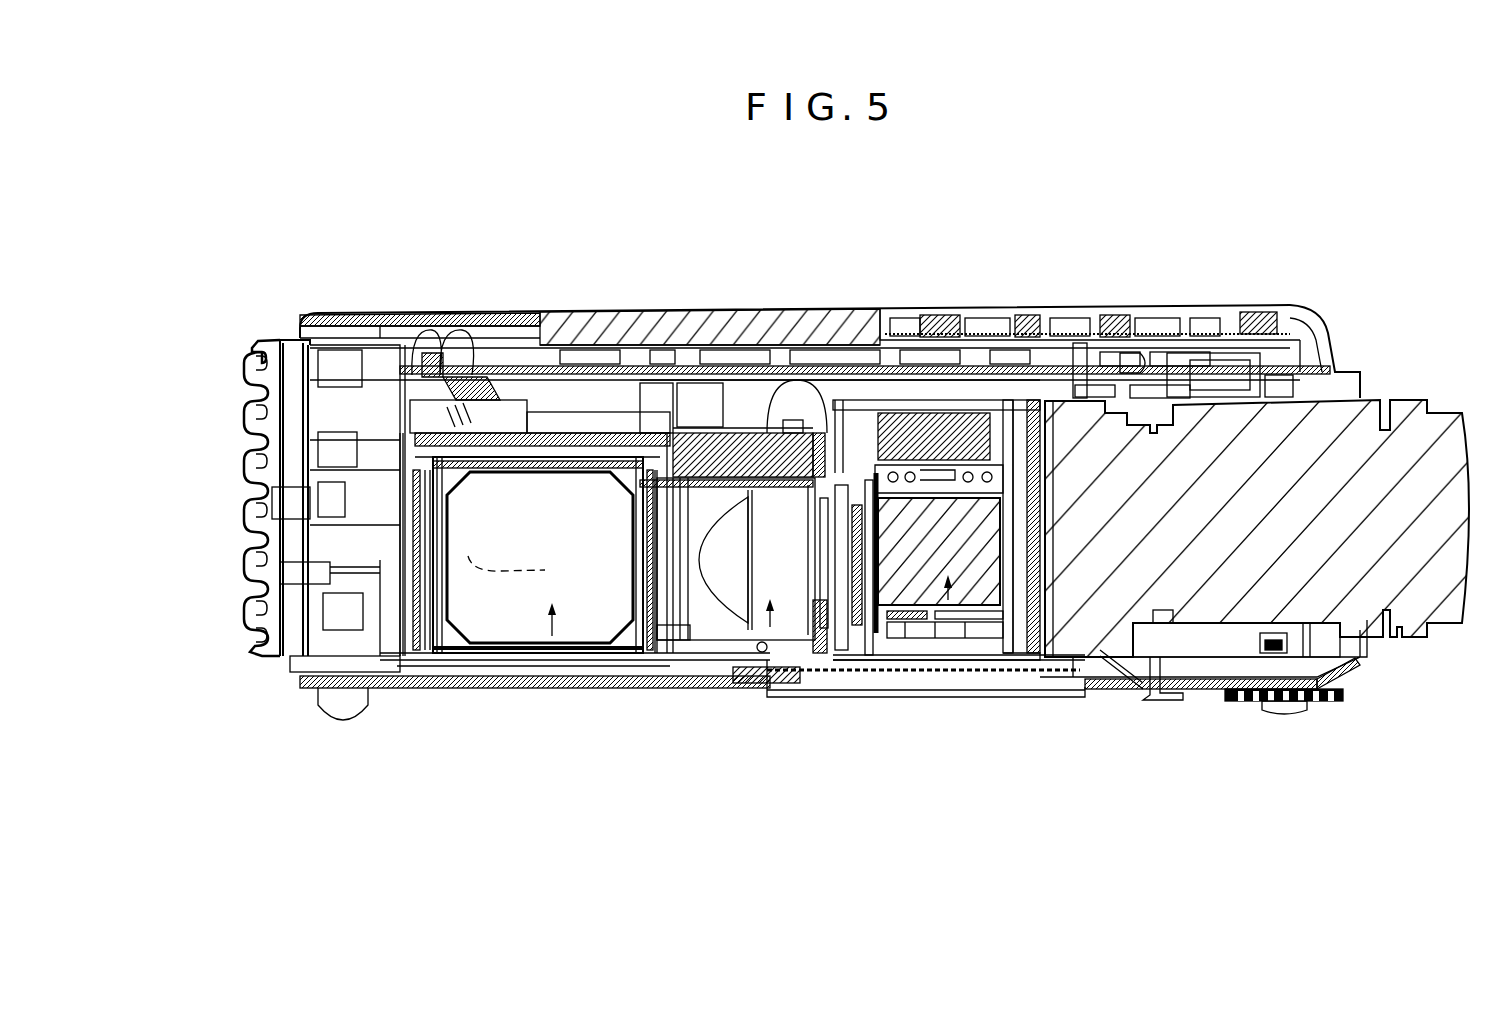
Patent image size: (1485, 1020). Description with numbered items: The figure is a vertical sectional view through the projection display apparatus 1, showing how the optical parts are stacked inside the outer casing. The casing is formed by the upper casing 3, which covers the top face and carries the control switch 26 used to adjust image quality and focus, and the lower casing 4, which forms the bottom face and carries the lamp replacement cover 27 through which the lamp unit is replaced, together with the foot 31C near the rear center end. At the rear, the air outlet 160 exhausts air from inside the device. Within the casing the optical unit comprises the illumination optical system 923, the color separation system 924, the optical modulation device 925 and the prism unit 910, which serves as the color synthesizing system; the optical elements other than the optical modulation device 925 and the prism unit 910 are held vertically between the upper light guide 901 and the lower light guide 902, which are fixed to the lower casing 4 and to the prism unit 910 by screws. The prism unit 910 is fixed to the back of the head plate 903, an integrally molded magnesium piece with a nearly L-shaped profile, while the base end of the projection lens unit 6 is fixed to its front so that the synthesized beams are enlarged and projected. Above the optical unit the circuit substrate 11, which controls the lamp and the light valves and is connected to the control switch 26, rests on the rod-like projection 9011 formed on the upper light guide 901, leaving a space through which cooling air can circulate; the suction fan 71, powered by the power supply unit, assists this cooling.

The projection display apparatus 1 is at (216, 266).
The upper casing 3 is at (562, 316).
The lower casing 4 is at (300, 683).
The projection lens unit 6 is at (1408, 430).
The circuit substrate 11 is at (740, 372).
The control switch 26 is at (1190, 318).
The lamp replacement cover 27 is at (521, 704).
The foot 31C is at (347, 718).
The suction fan 71 is at (915, 425).
The air outlet 160 is at (245, 497).
The upper light guide 901 is at (655, 405).
The rod-like projection 9011 is at (668, 412).
The lower light guide 902 is at (690, 660).
The head plate 903 is at (1023, 697).
The prism unit 910 is at (948, 685).
The illumination optical system 923 is at (557, 655).
The color separation system 924 is at (767, 693).
The optical modulation device 925 is at (847, 697).